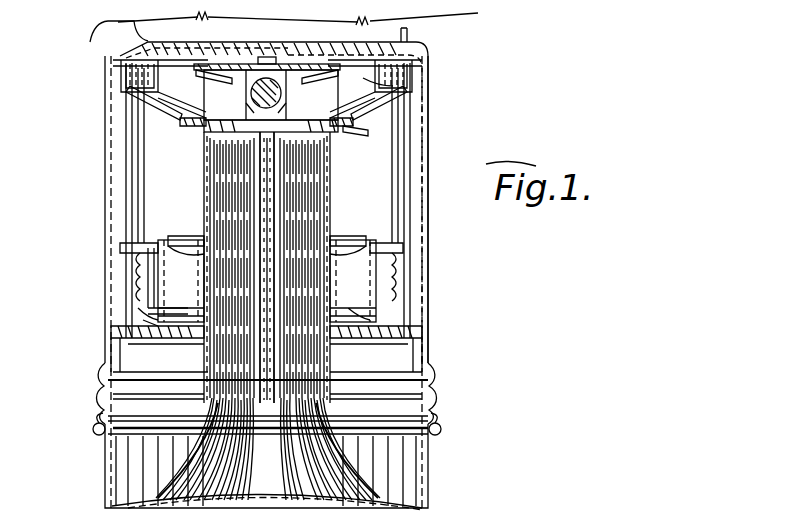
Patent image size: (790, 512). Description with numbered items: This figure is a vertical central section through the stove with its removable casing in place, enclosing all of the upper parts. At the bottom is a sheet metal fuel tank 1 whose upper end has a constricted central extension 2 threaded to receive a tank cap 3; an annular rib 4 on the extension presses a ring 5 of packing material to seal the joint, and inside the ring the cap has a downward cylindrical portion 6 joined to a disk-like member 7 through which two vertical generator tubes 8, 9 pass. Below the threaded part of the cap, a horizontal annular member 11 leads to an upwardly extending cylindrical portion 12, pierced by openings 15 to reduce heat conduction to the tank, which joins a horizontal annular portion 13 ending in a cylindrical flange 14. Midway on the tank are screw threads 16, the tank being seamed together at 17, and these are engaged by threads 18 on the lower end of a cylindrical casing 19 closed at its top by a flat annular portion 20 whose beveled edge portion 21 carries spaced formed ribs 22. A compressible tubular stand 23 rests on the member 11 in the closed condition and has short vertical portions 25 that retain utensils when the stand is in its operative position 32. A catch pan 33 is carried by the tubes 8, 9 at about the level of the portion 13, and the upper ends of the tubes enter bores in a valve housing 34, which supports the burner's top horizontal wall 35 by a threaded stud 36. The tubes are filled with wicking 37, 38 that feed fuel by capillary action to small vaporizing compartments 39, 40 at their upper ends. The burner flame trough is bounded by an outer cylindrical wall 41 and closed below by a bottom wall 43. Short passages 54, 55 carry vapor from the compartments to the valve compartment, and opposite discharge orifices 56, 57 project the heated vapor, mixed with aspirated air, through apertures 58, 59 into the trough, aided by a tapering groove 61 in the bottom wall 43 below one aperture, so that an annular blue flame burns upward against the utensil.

The fuel tank 1 is at (100, 482).
The constricted central extension 2 is at (152, 322).
The tank cap 3 is at (148, 262).
The annular rib 4 is at (150, 290).
The ring of packing material 5 is at (135, 248).
The cylindrical portion 6 is at (362, 300).
The disk-like member 7 is at (372, 322).
The generator tube 8 is at (215, 362).
The generator tube 9 is at (322, 364).
The horizontal annular member 11 is at (140, 312).
The cylindrical upwardly extending portion 12 is at (150, 302).
The horizontal annular portion 13 is at (132, 242).
The cylindrical flange 14 is at (130, 214).
The openings 15 is at (392, 258).
The screw threads 16 is at (110, 438).
The seam 17 is at (88, 425).
The casing threads 18 is at (95, 400).
The casing 19 is at (150, 276).
The annular horizontal portion 20 is at (120, 12).
The outer edge portion 21 is at (108, 43).
The ribs 22 is at (408, 46).
The compressible tubular stand 23 is at (132, 192).
The vertical portions 25 is at (104, 58).
The operative position 32 is at (120, 174).
The catch pan 33 is at (340, 230).
The valve housing 34 is at (330, 128).
The top horizontal wall 35 is at (400, 33).
The threaded stud 36 is at (260, 50).
The wicking 37 is at (222, 378).
The wicking 38 is at (302, 383).
The vaporizing compartment 39 is at (200, 142).
The vaporizing compartment 40 is at (318, 142).
The outer cylindrical wall 41 is at (118, 80).
The bottom wall 43 is at (170, 113).
The passage 54 is at (240, 90).
The passage 55 is at (274, 90).
The discharge orifice 56 is at (246, 68).
The discharge orifice 57 is at (292, 68).
The aperture 58 is at (140, 94).
The aperture 59 is at (372, 72).
The groove 61 is at (345, 120).